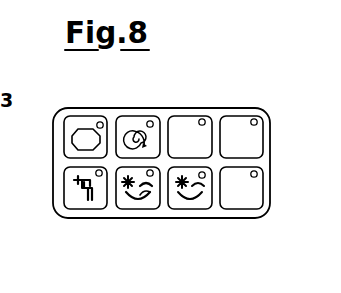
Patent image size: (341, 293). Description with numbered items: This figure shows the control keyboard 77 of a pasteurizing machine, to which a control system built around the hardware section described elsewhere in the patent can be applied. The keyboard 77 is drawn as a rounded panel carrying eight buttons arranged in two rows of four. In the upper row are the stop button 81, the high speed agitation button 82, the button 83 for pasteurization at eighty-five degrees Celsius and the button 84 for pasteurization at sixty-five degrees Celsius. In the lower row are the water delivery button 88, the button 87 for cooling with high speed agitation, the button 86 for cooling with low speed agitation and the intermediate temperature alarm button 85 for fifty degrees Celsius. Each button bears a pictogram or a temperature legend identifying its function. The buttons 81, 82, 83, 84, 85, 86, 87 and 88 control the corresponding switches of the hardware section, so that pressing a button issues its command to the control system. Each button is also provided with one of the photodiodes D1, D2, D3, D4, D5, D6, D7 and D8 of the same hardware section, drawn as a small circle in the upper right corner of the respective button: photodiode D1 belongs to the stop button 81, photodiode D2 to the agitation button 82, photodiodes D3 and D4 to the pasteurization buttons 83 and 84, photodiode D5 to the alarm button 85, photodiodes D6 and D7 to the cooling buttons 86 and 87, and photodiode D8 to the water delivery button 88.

The keyboard 77 is at (166, 104).
The stop button 81 is at (70, 122).
The high speed agitation button 82 is at (119, 122).
The button for pasteurization at 85° C. 83 is at (180, 120).
The button for pasteurization at 65° C. 84 is at (230, 122).
The intermediate temperature alarm button 85 is at (250, 203).
The button for cooling with low speed agitation 86 is at (180, 205).
The button for cooling with high speed agitation 87 is at (123, 207).
The water delivery button 88 is at (77, 204).
The photodiode D1 is at (100, 121).
The photodiode D2 is at (150, 120).
The photodiode D3 is at (201, 118).
The photodiode D4 is at (257, 120).
The photodiode D5 is at (257, 173).
The photodiode D6 is at (212, 205).
The photodiode D7 is at (162, 208).
The photodiode D8 is at (96, 172).